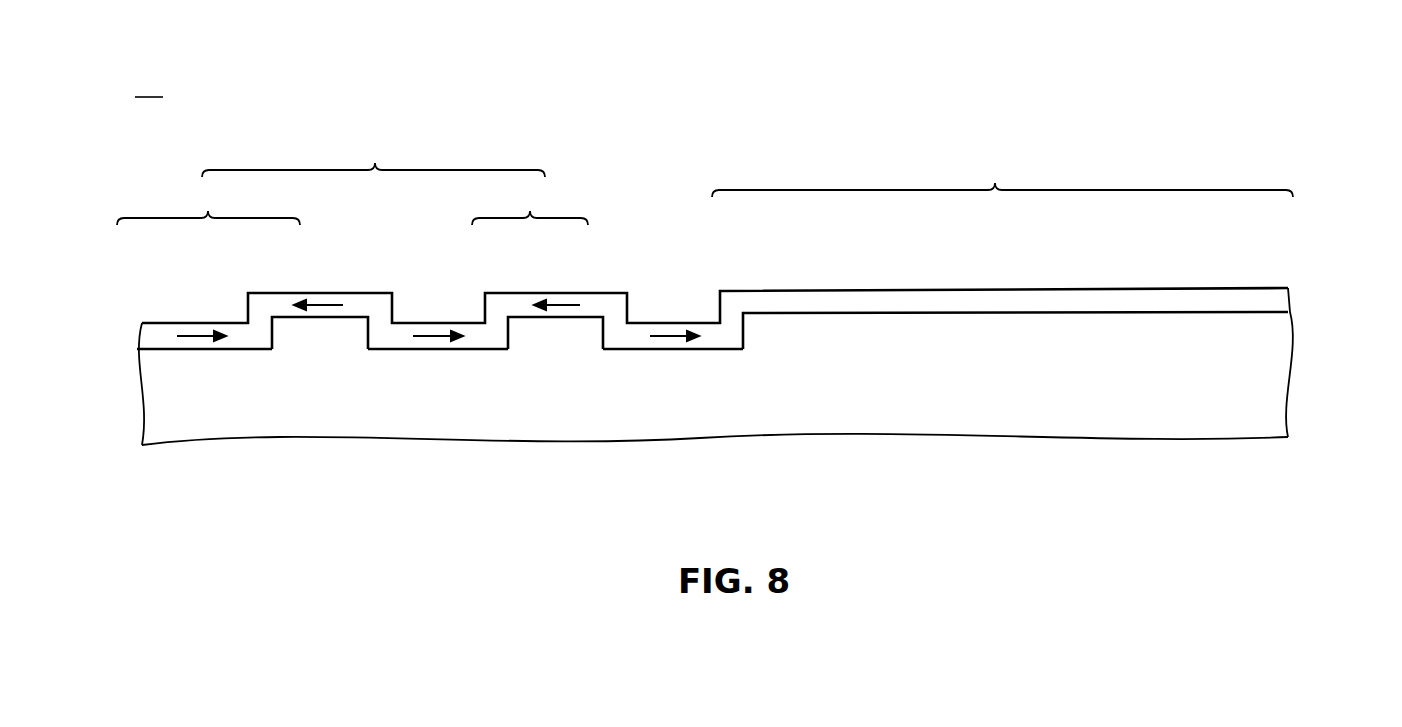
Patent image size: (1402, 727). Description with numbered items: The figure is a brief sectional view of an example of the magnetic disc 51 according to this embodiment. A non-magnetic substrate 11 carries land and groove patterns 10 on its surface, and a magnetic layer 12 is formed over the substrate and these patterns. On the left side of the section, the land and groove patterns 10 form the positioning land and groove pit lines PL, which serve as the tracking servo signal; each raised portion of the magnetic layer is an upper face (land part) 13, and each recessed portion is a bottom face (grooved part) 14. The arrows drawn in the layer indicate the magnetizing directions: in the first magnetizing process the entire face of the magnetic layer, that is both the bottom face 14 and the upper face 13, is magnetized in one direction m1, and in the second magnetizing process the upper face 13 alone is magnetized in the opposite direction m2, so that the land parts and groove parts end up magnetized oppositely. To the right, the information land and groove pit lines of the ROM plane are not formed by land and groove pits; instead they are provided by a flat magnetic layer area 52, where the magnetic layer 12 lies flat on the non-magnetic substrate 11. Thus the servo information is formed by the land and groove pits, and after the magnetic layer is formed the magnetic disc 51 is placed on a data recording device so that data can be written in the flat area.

The magnetic disc 51 is at (149, 86).
The flat magnetic layer area 52 is at (1002, 176).
The positioning land and groove pit lines PL is at (373, 155).
The land and groove patterns 10 is at (352, 202).
The bottom face (grooved part) 14 is at (165, 323).
The upper face (land part) 13 is at (281, 292).
The magnetic layer 12 is at (1281, 300).
The non-magnetic substrate 11 is at (1275, 377).
The first magnetizing direction m1 is at (430, 336).
The second magnetizing direction m2 is at (330, 308).